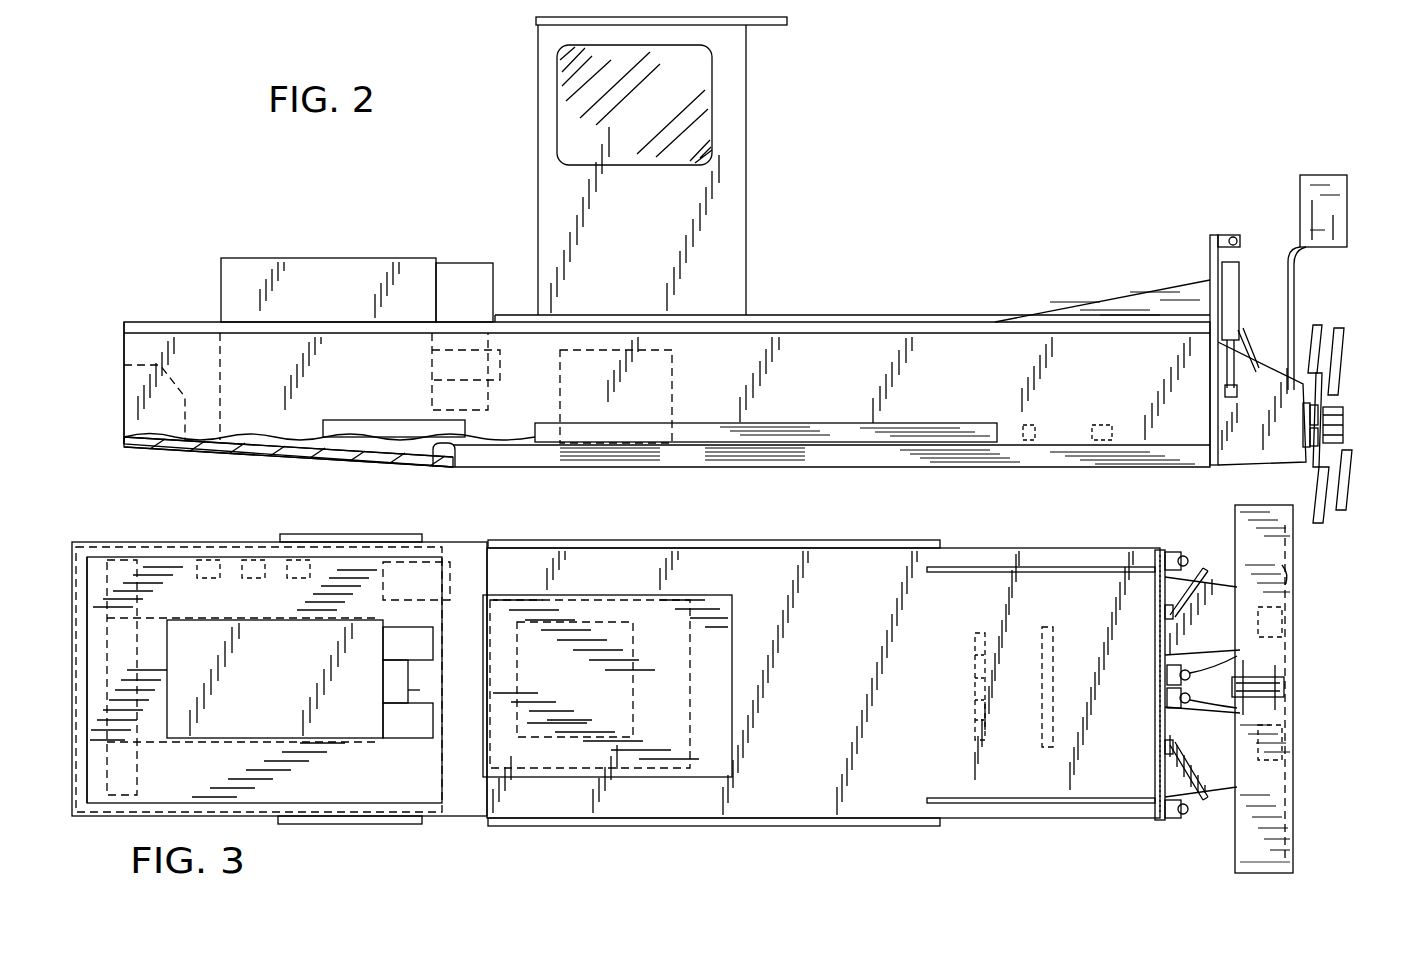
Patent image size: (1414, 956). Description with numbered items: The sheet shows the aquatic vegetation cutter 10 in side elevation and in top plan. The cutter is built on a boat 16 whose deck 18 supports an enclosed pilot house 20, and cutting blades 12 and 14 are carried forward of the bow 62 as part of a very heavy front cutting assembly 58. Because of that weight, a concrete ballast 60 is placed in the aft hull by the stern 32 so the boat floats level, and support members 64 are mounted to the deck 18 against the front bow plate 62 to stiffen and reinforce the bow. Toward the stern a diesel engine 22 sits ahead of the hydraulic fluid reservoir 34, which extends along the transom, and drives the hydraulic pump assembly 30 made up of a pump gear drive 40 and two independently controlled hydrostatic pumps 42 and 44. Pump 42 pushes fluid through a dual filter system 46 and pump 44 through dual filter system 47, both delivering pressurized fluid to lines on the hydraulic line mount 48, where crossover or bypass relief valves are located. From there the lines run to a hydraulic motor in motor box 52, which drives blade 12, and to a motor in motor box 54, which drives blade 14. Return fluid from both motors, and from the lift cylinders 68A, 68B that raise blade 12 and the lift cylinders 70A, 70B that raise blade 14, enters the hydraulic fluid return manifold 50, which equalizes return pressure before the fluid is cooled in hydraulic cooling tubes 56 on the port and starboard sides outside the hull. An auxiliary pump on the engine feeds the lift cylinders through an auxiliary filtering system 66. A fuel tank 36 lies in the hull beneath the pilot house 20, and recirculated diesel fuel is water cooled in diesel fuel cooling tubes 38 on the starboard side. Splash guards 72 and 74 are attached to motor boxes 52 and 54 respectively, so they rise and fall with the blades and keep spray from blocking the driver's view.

In FIG. 2, the aquatic vegetation cutter 10 is at (978, 163).
In FIG. 3, the aquatic vegetation cutter 10 is at (969, 520).
In FIG. 2, the cutting blade 12 is at (1321, 525).
In FIG. 3, the cutting blade 12 is at (1330, 523).
In FIG. 2, the cutting blade 14 is at (1352, 512).
In FIG. 3, the cutting blade 14 is at (1350, 510).
In FIG. 2, the boat 16 is at (819, 352).
In FIG. 3, the deck 18 is at (860, 813).
In FIG. 2, the pilot house 20 is at (740, 66).
In FIG. 3, the pilot house 20 is at (670, 608).
In FIG. 2, the diesel engine 22 is at (320, 262).
In FIG. 3, the diesel engine 22 is at (285, 687).
In FIG. 2, the hydraulic pump assembly 30 is at (462, 270).
In FIG. 3, the hydraulic pump assembly 30 is at (405, 675).
In FIG. 2, the stern 32 is at (123, 405).
In FIG. 3, the stern 32 is at (70, 708).
In FIG. 2, the hydraulic fluid reservoir 34 is at (140, 362).
In FIG. 3, the hydraulic fluid reservoir 34 is at (98, 630).
In FIG. 2, the fuel tank 36 is at (658, 390).
In FIG. 3, the fuel tank 36 is at (623, 647).
In FIG. 3, the diesel fuel cooling tubes 38 is at (350, 826).
In FIG. 3, the pump gear drive 40 is at (405, 690).
In FIG. 3, the hydrostatic pump 42 is at (427, 725).
In FIG. 3, the hydrostatic pump 44 is at (428, 640).
In FIG. 3, the dual filter system 46 is at (205, 578).
In FIG. 3, the dual filter system 47 is at (248, 578).
In FIG. 2, the hydraulic line mount 48 is at (1104, 425).
In FIG. 3, the hydraulic line mount 48 is at (1053, 645).
In FIG. 2, the hydraulic fluid return manifold 50 is at (1032, 425).
In FIG. 3, the hydraulic fluid return manifold 50 is at (975, 723).
In FIG. 2, the motor box 52 is at (1248, 455).
In FIG. 3, the motor box 52 is at (1215, 783).
In FIG. 3, the motor box 54 is at (1213, 590).
In FIG. 2, the hydraulic cooling tubes 56 is at (815, 431).
In FIG. 3, the hydraulic cooling tubes 56 is at (732, 538).
In FIG. 2, the front cutting assembly 58 is at (1257, 220).
In FIG. 3, the front cutting assembly 58 is at (1163, 839).
In FIG. 2, the concrete ballast 60 is at (275, 462).
In FIG. 2, the bow 62 is at (1210, 247).
In FIG. 3, the bow 62 is at (1160, 550).
In FIG. 2, the support members 64 is at (1142, 293).
In FIG. 3, the support members 64 is at (1037, 573).
In FIG. 3, the auxiliary filtering system 66 is at (296, 578).
In FIG. 3, the lift cylinder 68A is at (1242, 708).
In FIG. 3, the lift cylinder 68B is at (1180, 822).
In FIG. 3, the lift cylinder 70A is at (1242, 662).
In FIG. 3, the lift cylinder 70B is at (1180, 550).
In FIG. 2, the splash guard 72 is at (1343, 225).
In FIG. 3, the splash guard 72 is at (1283, 860).
In FIG. 3, the splash guard 74 is at (1258, 508).